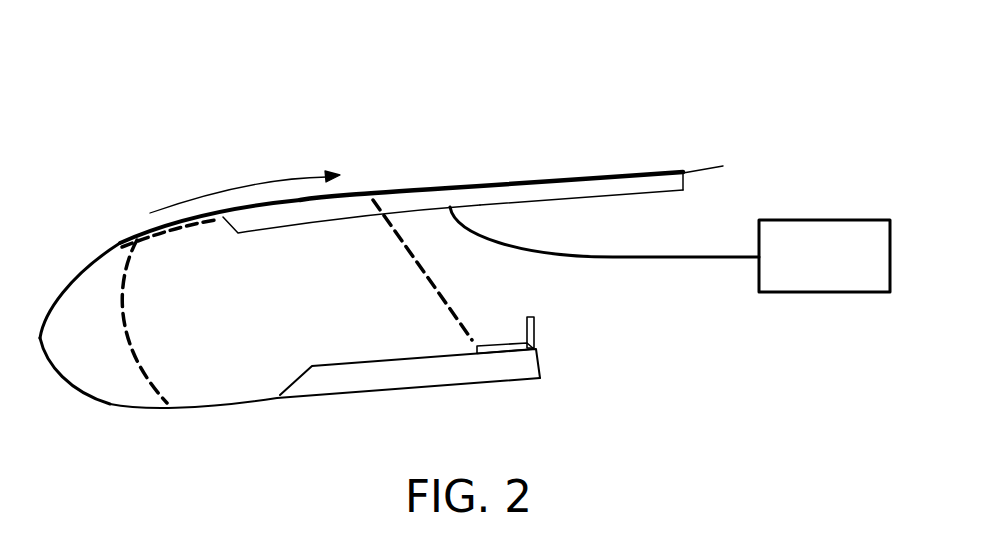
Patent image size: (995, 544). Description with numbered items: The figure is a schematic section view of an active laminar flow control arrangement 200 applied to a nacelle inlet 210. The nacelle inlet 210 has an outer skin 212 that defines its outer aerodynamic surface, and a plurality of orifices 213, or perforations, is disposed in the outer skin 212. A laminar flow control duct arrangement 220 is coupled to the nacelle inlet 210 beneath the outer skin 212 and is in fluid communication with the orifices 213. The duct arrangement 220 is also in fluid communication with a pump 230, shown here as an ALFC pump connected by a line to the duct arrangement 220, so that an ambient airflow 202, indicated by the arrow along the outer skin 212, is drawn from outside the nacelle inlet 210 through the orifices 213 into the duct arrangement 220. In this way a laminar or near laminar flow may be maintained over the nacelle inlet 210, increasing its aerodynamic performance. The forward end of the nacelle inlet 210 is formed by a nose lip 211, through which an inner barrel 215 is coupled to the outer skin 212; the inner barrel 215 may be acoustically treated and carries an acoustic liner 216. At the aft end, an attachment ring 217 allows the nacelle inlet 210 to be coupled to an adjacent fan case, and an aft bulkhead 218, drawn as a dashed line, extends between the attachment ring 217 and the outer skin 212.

The active laminar flow control arrangement 200 is at (270, 100).
The ambient airflow 202 is at (207, 193).
The nacelle inlet 210 is at (115, 247).
The nose lip 211 is at (53, 300).
The outer skin 212 is at (442, 188).
The orifices 213 is at (512, 180).
The inner barrel 215 is at (290, 400).
The acoustic liner 216 is at (395, 375).
The attachment ring 217 is at (537, 333).
The aft bulkhead 218 is at (440, 288).
The laminar flow control duct arrangement 220 is at (297, 217).
The pump 230 is at (807, 220).